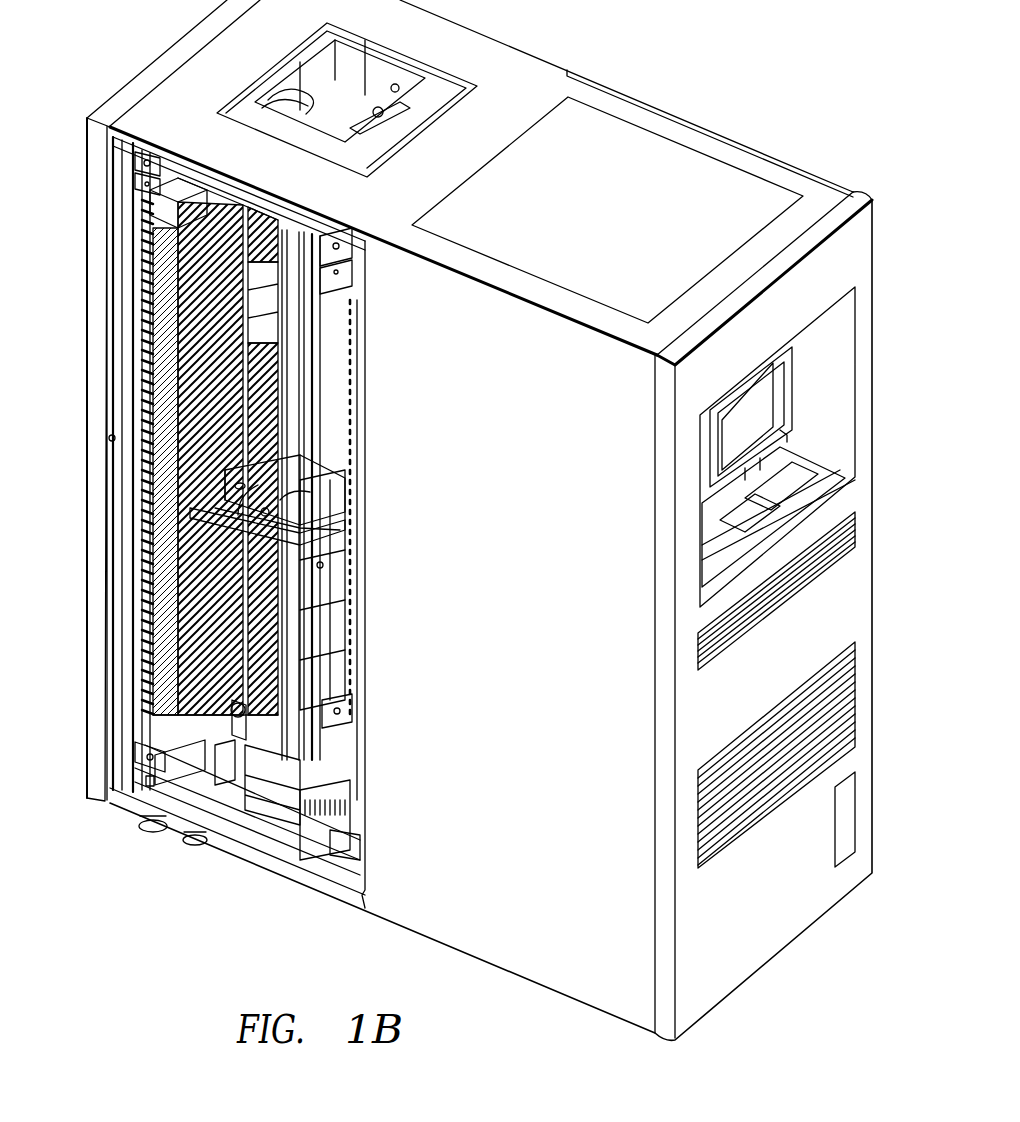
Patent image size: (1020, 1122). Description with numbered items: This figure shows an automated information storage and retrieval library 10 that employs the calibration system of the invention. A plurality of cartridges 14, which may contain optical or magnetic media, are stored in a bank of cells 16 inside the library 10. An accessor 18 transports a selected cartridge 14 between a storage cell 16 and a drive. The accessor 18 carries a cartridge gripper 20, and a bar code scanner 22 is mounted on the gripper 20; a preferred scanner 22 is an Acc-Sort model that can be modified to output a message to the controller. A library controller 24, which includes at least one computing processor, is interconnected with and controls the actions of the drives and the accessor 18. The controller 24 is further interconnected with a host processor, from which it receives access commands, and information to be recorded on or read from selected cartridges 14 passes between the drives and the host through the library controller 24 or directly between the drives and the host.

The automated information storage and retrieval library 10 is at (522, 68).
The cartridges 14 is at (150, 266).
The cells 16 is at (108, 436).
The accessor 18 is at (220, 772).
The cartridge gripper 20 is at (308, 578).
The bar code scanner 22 is at (268, 488).
The library controller 24 is at (847, 386).